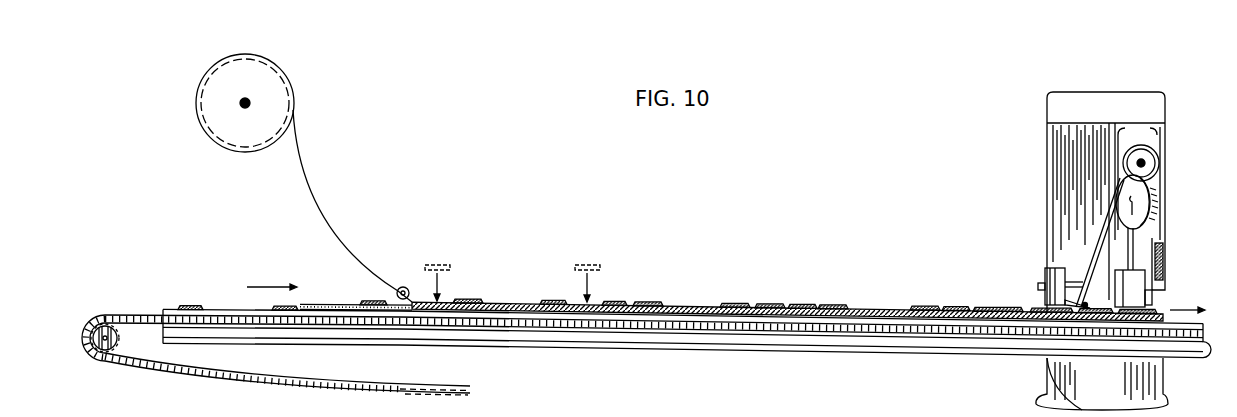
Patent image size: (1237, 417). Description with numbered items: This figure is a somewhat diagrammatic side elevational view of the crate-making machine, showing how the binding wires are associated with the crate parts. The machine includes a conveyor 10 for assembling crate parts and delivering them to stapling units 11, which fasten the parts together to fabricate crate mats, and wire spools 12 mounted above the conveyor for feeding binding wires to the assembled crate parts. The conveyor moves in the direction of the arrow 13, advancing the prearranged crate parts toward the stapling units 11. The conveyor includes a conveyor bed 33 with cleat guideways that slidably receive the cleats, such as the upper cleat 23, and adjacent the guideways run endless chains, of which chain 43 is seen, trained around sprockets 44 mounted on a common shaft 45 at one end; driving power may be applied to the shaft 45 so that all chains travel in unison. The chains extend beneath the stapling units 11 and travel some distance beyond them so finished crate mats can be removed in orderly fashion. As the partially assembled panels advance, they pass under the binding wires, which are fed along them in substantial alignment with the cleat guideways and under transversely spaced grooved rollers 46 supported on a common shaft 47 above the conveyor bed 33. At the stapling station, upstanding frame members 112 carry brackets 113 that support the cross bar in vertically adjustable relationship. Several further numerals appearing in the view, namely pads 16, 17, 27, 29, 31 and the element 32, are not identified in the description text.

The conveyor 10 is at (647, 258).
The stapling units 11 is at (1160, 195).
The wire spools 12 is at (296, 76).
The arrow 13 is at (272, 284).
The component pad 16 is at (696, 358).
The component pad 17 is at (282, 359).
The upper cleat 23 is at (981, 362).
The component pad 27 is at (1079, 362).
The component pad 29 is at (828, 360).
The component pad 31 is at (699, 359).
The chain return end 32 is at (436, 403).
The conveyor bed 33 is at (546, 353).
The endless chain 43 is at (134, 316).
The sprockets 44 is at (110, 317).
The common shaft 45 is at (98, 356).
The grooved rollers 46 is at (400, 286).
The common shaft 47 is at (410, 287).
The upstanding frame members 112 is at (1107, 251).
The brackets 113 is at (1062, 270).